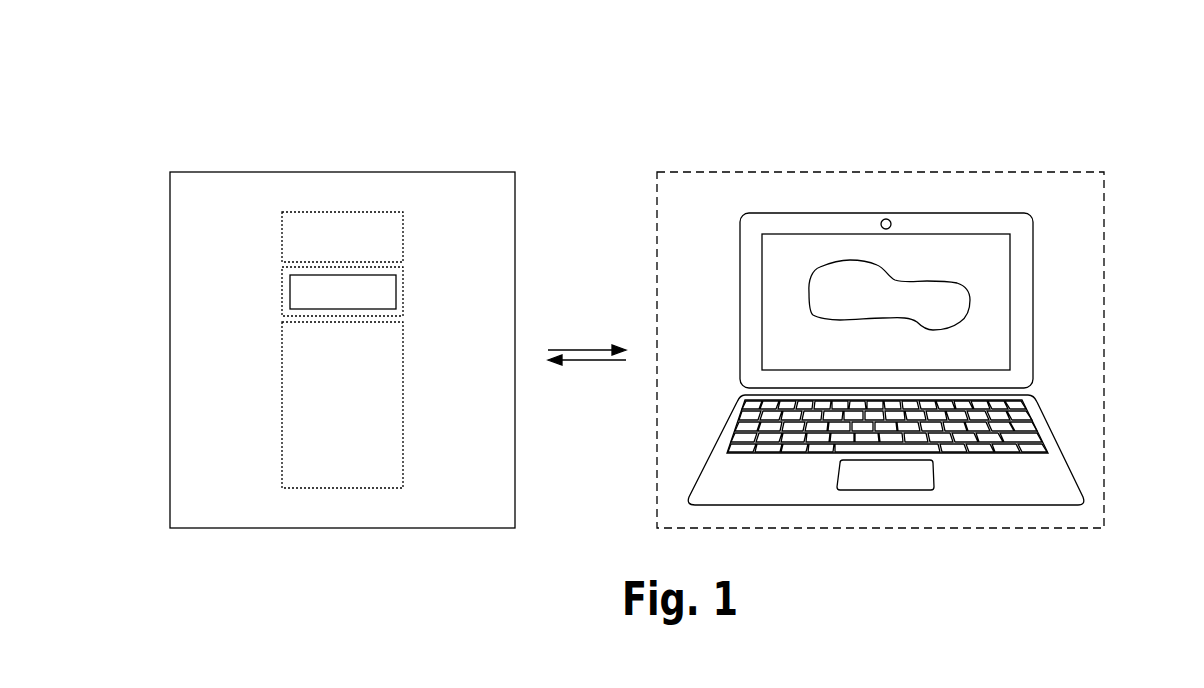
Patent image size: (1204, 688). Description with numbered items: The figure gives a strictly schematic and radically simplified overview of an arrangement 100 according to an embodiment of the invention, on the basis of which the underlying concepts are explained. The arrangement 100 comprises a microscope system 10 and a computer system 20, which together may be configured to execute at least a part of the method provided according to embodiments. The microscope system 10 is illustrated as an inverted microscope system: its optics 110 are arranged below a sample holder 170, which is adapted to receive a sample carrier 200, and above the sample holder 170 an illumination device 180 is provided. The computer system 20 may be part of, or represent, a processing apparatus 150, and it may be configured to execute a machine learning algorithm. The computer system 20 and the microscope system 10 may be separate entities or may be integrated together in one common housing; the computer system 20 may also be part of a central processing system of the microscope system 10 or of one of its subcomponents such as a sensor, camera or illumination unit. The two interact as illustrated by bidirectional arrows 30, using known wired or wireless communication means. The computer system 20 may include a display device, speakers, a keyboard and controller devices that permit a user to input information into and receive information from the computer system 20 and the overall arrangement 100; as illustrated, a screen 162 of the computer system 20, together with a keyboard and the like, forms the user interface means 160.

The microscope system 10 is at (347, 172).
The illumination device 180 is at (404, 233).
The sample holder 170 is at (404, 289).
The sample carrier 200 is at (290, 292).
The optics 110 is at (404, 405).
The bidirectional arrows 30 is at (587, 350).
The arrangement 100 is at (648, 85).
The processing apparatus 150 is at (1052, 172).
The computer system 20 is at (930, 339).
The user interface means 160 is at (956, 250).
The screen 162 is at (822, 213).